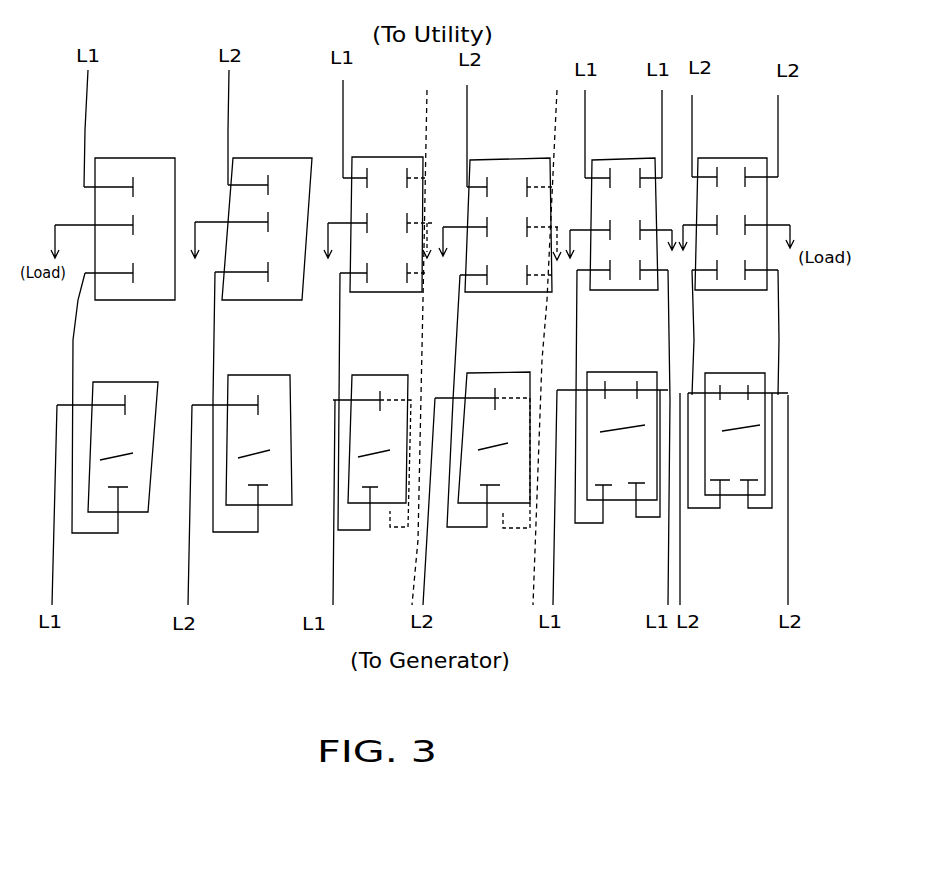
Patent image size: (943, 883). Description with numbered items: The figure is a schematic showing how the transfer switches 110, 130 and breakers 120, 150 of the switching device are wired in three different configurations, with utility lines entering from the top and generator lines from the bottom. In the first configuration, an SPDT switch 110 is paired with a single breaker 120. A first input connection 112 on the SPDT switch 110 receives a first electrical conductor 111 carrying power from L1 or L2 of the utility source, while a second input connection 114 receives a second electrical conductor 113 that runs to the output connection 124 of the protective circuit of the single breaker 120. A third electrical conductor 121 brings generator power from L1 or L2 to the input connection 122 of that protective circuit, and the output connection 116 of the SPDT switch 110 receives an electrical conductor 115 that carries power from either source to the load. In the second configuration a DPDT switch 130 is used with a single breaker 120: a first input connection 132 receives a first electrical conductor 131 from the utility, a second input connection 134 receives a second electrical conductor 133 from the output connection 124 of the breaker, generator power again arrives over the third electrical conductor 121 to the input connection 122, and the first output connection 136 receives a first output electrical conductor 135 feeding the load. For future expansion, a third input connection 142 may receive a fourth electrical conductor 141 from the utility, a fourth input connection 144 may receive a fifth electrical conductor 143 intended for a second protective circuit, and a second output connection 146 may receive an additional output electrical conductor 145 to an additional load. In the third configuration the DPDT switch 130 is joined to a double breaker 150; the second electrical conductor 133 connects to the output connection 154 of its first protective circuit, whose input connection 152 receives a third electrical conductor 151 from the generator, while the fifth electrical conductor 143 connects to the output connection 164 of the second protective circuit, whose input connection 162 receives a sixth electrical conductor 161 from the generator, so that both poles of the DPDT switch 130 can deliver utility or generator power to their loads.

The SPDT switch 110 is at (130, 160).
The first electrical conductor 111 is at (86, 133).
The first input connection 112 is at (192, 186).
The second electrical conductor 113 is at (73, 312).
The second input connection 114 is at (192, 272).
The electrical conductor 115 is at (75, 225).
The output connection 116 is at (177, 223).
The single breaker 120 is at (309, 442).
The third electrical conductor 121 is at (430, 547).
The input connection 122 is at (276, 394).
The output connection 124 is at (116, 487).
The DPDT switch 130 is at (725, 158).
The first electrical conductor 131 is at (693, 118).
The first input connection 132 is at (540, 175).
The second electrical conductor 133 is at (692, 312).
The second input connection 134 is at (534, 264).
The first output electrical conductor 135 is at (708, 224).
The first output connection 136 is at (533, 219).
The fourth electrical conductor 141 is at (778, 120).
The third input connection 142 is at (581, 184).
The fifth electrical conductor 143 is at (778, 306).
The fourth input connection 144 is at (580, 276).
The additional output electrical conductor 145 is at (800, 197).
The second output connection 146 is at (588, 230).
The double breaker 150 is at (676, 436).
The third electrical conductor 151 is at (681, 546).
The input connection 152 is at (720, 385).
The output connection 154 is at (720, 480).
The sixth electrical conductor 161 is at (788, 546).
The input connection 162 is at (748, 385).
The output connection 164 is at (748, 480).